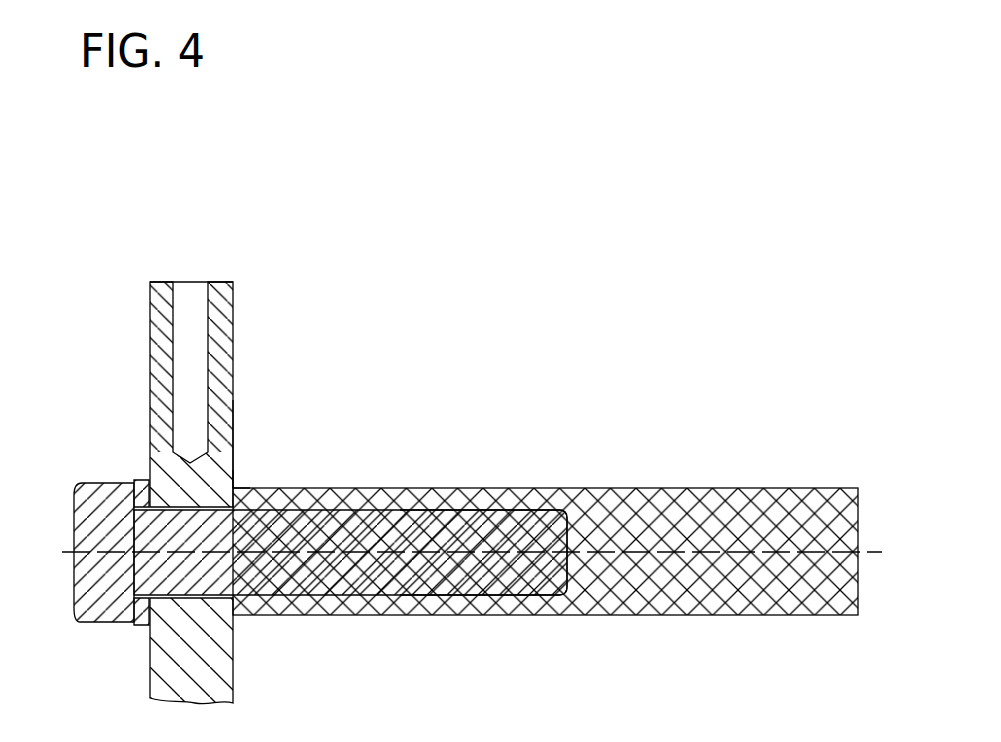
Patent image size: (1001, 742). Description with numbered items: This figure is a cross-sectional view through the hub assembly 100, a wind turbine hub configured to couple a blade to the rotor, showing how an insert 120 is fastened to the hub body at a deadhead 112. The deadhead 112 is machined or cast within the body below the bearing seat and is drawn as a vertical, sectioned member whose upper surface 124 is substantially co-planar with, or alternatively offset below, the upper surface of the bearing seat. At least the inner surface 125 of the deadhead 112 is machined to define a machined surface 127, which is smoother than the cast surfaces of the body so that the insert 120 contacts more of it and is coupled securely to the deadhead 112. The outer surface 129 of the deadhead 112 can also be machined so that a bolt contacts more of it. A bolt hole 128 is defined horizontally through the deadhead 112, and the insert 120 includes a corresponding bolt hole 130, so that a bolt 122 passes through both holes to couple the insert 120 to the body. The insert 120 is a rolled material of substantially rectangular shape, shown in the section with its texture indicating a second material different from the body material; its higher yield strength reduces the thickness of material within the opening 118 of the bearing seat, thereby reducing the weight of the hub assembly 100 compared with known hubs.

The hub assembly 100 is at (693, 327).
The deadhead 112 is at (157, 373).
The opening 118 is at (379, 437).
The insert 120 is at (688, 527).
The bolt 122 is at (95, 610).
The upper surface 124 is at (155, 282).
The inner surface 125 is at (234, 453).
The machined surface 127 is at (236, 478).
The bolt hole 128 is at (212, 533).
The outer surface 129 is at (148, 477).
The bolt hole 130 is at (452, 538).